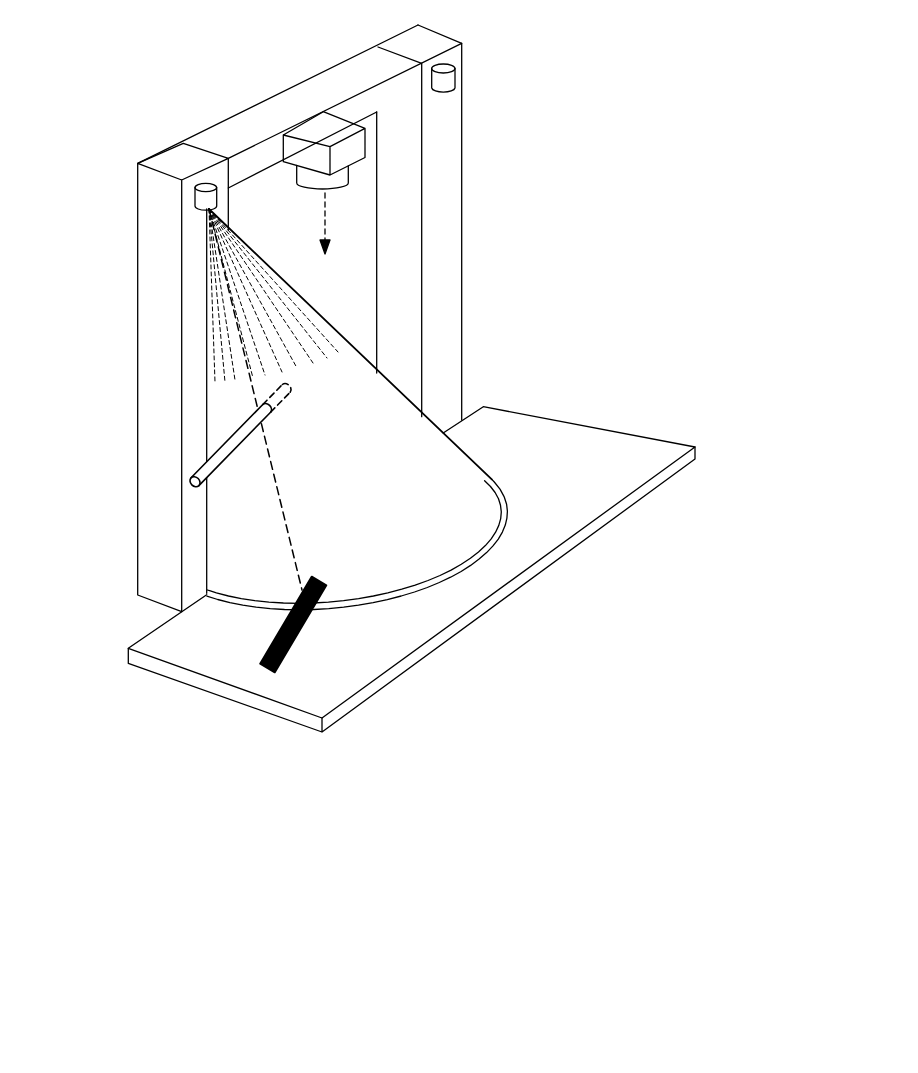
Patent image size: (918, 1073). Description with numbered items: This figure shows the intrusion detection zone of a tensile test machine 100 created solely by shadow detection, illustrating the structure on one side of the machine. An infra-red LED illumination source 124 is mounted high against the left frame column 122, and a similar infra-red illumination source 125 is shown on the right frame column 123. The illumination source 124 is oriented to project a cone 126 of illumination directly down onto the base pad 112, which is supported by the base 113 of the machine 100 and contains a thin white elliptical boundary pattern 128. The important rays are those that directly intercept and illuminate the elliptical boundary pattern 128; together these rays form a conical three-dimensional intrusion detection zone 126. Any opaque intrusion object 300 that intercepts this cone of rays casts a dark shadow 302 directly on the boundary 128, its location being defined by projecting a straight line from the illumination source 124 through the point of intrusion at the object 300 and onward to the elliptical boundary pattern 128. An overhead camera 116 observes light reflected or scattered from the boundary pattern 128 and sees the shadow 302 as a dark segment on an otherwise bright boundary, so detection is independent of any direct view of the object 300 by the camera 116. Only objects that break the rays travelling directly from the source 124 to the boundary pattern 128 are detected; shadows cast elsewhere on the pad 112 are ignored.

The tensile test machine 100 is at (254, 77).
The base pad 112 is at (532, 428).
The base 113 is at (633, 498).
The overhead camera 116 is at (351, 182).
The left frame column 122 is at (147, 381).
The right frame column 123 is at (465, 261).
The infra-red LED illumination source 124 is at (195, 197).
The infra-red illumination source 125 is at (456, 79).
The cone of illumination 126 is at (348, 344).
The elliptical boundary pattern 128 is at (487, 554).
The intrusion object 300 is at (192, 468).
The shadow 302 is at (266, 653).